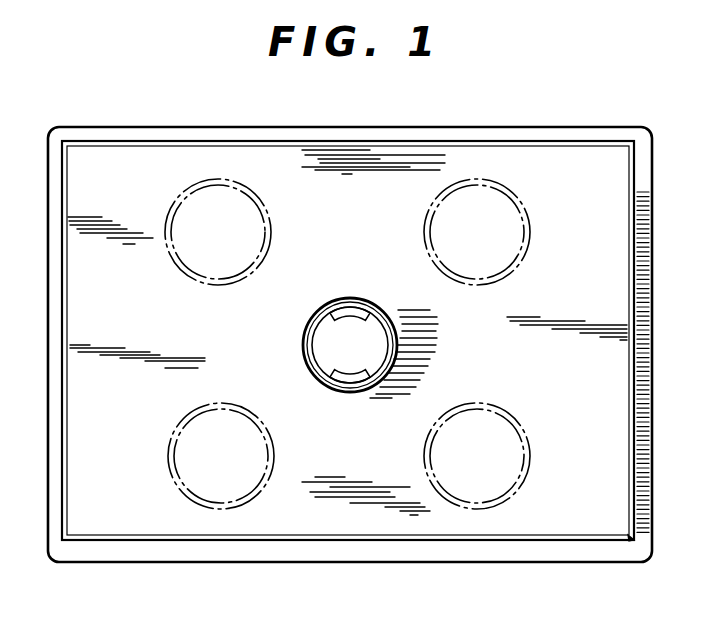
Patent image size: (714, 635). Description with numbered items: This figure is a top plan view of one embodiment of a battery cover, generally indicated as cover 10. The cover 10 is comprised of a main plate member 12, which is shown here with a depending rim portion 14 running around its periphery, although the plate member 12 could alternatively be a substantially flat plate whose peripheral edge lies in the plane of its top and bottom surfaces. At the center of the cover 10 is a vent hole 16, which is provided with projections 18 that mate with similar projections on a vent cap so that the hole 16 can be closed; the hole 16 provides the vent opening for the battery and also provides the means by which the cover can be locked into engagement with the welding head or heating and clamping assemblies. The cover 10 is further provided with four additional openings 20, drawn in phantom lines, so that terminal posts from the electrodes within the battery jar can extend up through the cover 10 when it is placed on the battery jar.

The cover 10 is at (350, 297).
The main plate member 12 is at (520, 369).
The depending rim portion 14 is at (636, 552).
The vent hole 16 is at (318, 342).
The projections 18 is at (348, 316).
The additional openings 20 is at (347, 344).